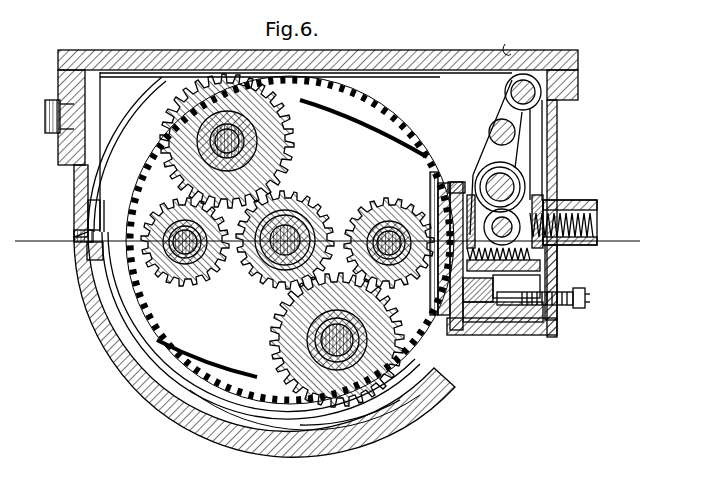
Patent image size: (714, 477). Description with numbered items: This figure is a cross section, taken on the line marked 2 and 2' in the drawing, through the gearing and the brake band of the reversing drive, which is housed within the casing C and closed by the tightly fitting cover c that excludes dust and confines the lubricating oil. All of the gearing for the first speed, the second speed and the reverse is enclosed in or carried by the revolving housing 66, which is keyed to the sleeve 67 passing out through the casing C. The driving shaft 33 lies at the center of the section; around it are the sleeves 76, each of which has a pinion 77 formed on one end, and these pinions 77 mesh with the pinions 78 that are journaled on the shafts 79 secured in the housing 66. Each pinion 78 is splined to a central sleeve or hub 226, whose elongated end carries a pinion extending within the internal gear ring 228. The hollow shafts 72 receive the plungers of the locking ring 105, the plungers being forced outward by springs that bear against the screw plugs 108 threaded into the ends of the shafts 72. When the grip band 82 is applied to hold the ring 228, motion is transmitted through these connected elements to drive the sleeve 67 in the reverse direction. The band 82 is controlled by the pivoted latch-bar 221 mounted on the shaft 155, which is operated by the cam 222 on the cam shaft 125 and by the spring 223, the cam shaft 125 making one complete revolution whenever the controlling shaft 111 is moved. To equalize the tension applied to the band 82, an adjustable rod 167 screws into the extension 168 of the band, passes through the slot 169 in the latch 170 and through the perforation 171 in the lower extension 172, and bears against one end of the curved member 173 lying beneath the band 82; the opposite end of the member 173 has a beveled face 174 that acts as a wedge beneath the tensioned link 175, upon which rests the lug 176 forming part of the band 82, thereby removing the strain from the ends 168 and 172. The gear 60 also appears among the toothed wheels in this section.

The section line 2 is at (321, 244).
The cover plate 2' is at (306, 47).
The casing C is at (311, 253).
The cover c is at (509, 44).
The central sleeve 226 is at (228, 135).
The internal gear ring 228 is at (365, 112).
The grip band 82 is at (405, 125).
The screw plug 108 is at (433, 175).
The shaft 155 is at (541, 90).
The controlling shaft 111 is at (515, 130).
The pivoted latch-bar 221 is at (528, 140).
The cam shaft 125 is at (514, 180).
The cam 222 is at (571, 198).
The adjustable rod 167 is at (500, 179).
The extension 168 is at (548, 190).
The spring 223 is at (582, 222).
The latch 170 is at (553, 262).
The lower extension 172 is at (555, 295).
The perforation 171 is at (483, 300).
The curved member 173 is at (378, 412).
The tensioned link 175 is at (95, 218).
The lug 176 is at (74, 246).
The beveled face 174 is at (80, 268).
The locking ring 105 is at (148, 272).
The pinion 77 is at (367, 195).
The hollow shaft 72 is at (287, 250).
The shaft 33 is at (287, 267).
The sleeve 67 is at (266, 285).
The shaft 79 is at (250, 152).
The sleeve 76 is at (290, 348).
The pinion 78 is at (268, 145).
The revolving housing 66 is at (358, 125).
The sun gear 60 is at (300, 213).
The slot 169 is at (361, 266).